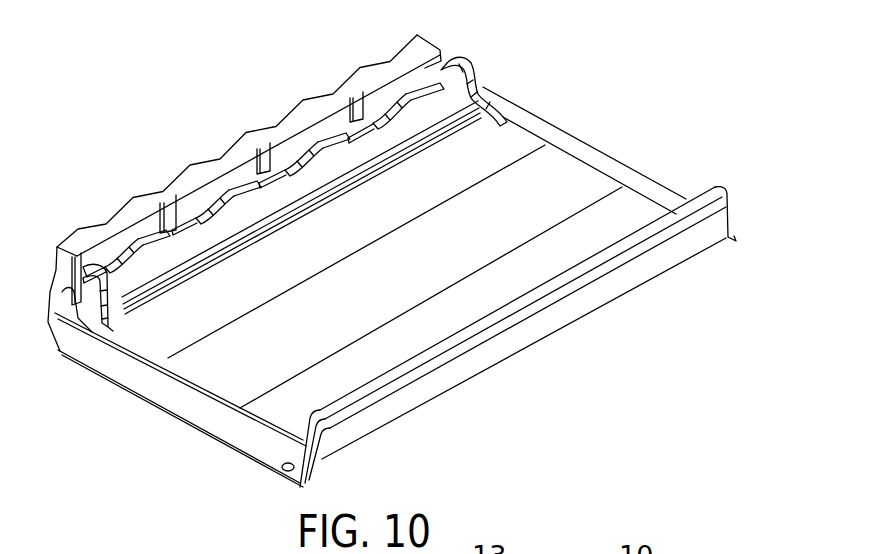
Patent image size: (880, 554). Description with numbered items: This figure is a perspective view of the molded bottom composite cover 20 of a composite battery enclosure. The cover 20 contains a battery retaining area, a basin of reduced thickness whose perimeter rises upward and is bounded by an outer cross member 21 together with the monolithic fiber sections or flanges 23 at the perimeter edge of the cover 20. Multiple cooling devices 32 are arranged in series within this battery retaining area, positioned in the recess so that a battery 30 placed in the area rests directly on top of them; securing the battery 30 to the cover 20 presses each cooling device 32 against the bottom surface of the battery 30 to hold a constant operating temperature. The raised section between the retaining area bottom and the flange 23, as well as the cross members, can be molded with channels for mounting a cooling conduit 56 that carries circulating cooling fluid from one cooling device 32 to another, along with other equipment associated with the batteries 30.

The bottom composite cover 20 is at (588, 313).
The outer cross member 21 is at (716, 188).
The monolithic fiber section 23 is at (626, 172).
The battery 30 is at (192, 172).
The cooling device 32 is at (505, 142).
The cooling conduit 56 is at (462, 66).